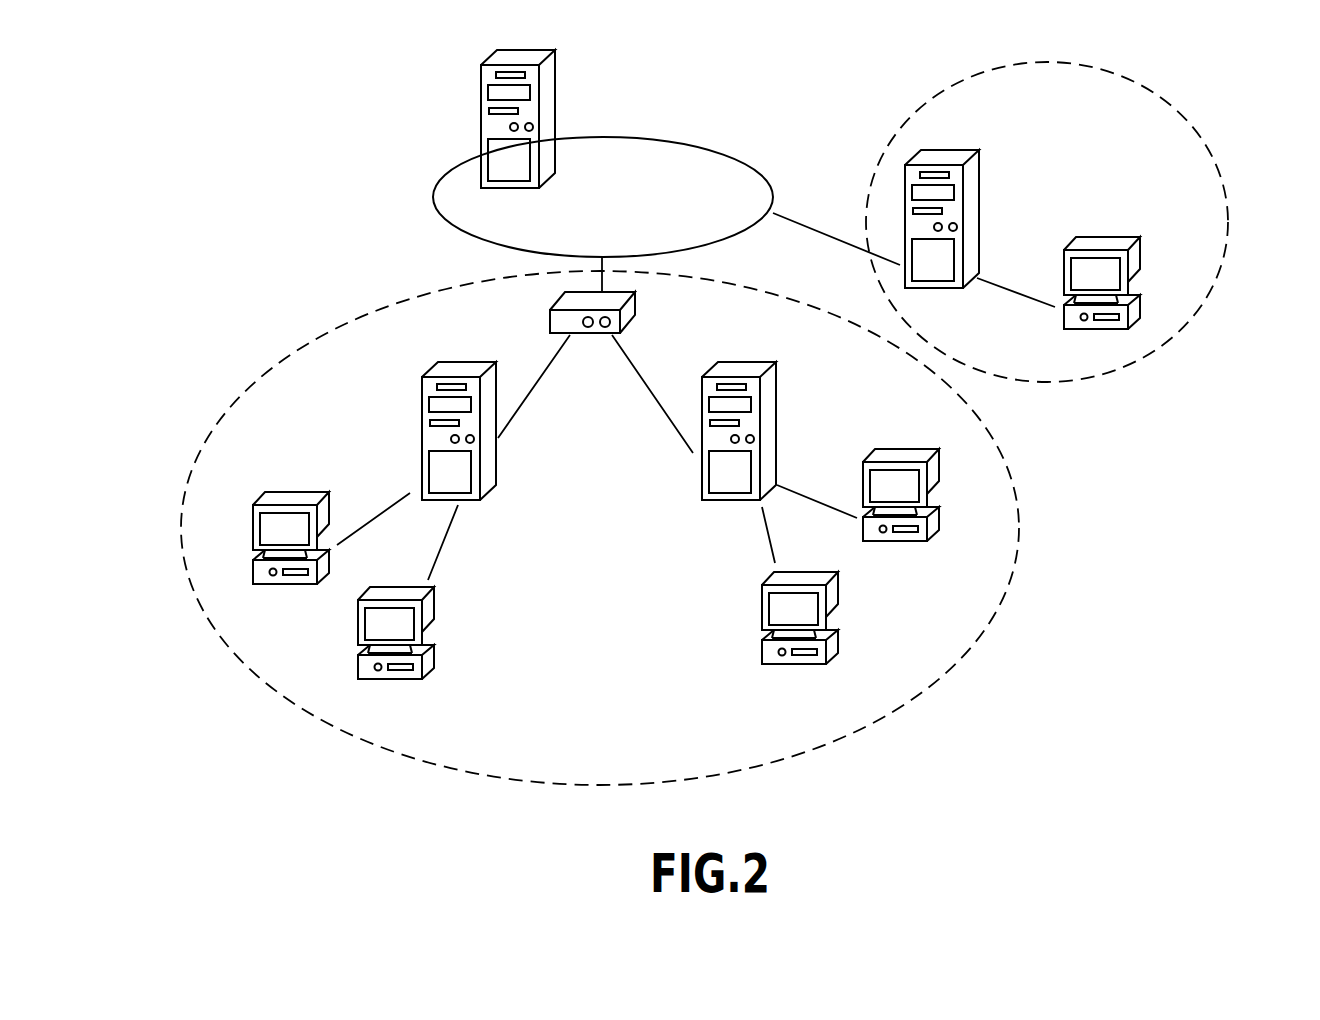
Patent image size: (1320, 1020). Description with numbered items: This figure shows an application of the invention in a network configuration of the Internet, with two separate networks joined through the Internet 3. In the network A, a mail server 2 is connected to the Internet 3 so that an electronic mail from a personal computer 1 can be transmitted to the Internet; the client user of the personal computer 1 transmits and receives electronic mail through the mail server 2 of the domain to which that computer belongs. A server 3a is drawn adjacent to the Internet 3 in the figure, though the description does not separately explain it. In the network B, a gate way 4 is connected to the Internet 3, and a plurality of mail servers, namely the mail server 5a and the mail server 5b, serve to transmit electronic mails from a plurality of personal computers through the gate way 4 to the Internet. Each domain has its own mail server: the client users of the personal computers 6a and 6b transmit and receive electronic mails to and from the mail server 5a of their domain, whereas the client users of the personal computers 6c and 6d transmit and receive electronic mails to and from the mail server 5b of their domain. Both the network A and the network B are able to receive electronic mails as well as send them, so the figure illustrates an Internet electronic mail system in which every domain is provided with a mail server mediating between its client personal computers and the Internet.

The personal computer 1 is at (1120, 237).
The mail server 2 is at (977, 178).
The Internet 3 is at (603, 197).
The Internet server 3a is at (557, 90).
The gate way 4 is at (636, 312).
The mail server 5a is at (776, 398).
The mail server 5b is at (495, 473).
The personal computer 6a is at (905, 541).
The personal computer 6b is at (787, 664).
The personal computer 6c is at (435, 655).
The personal computer 6d is at (290, 583).
The network A is at (1228, 225).
The network B is at (1015, 572).